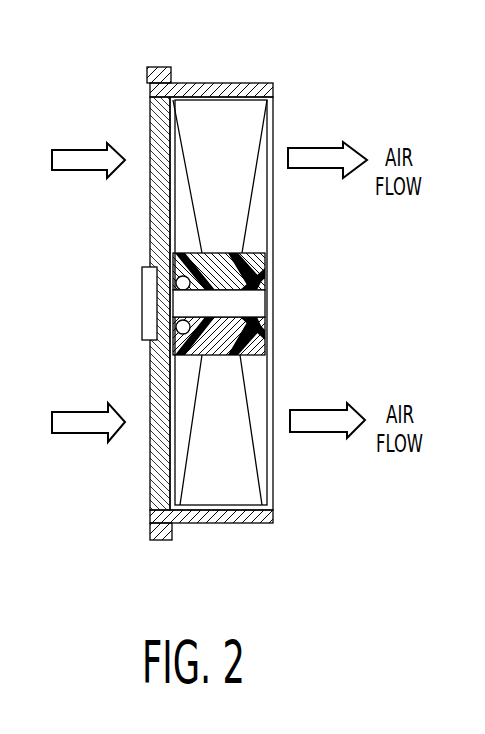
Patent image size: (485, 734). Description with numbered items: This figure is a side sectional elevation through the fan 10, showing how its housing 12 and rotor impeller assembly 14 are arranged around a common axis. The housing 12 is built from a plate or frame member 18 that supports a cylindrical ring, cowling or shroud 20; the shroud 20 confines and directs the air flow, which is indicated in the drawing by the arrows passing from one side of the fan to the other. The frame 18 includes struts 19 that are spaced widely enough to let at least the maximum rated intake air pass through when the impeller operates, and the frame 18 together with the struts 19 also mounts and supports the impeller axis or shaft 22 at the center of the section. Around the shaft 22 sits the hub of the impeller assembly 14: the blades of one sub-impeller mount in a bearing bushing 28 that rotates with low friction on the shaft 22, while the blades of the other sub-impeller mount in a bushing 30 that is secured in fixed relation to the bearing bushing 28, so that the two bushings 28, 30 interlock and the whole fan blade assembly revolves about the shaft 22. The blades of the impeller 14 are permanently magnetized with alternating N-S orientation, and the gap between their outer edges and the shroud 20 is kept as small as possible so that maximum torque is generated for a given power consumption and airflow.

The fan embodiment 10 is at (326, 81).
The housing 12 is at (258, 78).
The rotor impeller assembly 14 is at (193, 129).
The plate or frame member 18 is at (147, 82).
The struts 19 is at (148, 223).
The shroud 20 is at (258, 523).
The shaft 22 is at (263, 308).
The bearing bushing 28 is at (263, 272).
The bushing 30 is at (148, 257).